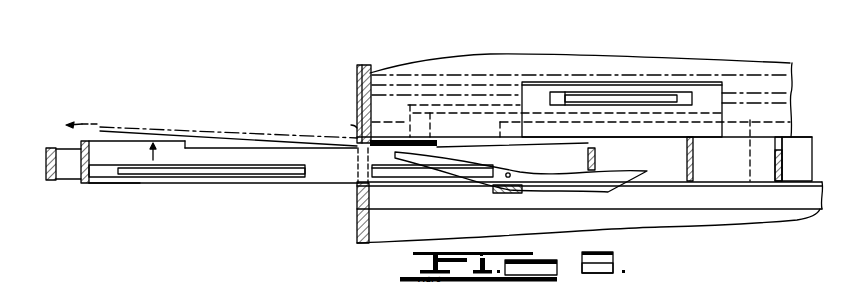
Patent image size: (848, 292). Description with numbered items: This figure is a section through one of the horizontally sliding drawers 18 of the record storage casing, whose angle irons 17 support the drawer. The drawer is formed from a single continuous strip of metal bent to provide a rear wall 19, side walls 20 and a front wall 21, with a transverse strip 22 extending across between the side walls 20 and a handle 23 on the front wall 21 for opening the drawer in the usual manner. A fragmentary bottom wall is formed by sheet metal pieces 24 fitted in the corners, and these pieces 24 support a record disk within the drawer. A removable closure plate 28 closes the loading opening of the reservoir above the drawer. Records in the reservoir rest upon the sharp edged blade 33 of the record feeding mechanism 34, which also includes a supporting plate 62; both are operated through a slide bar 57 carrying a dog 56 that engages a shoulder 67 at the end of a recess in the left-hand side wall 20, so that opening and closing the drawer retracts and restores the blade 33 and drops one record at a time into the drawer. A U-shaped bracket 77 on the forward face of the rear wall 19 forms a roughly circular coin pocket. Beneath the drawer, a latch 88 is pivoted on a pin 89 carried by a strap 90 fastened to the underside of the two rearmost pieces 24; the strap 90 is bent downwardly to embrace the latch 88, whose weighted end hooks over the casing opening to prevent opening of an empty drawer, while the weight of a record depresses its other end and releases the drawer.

The angle irons 17 is at (408, 201).
The drawer 18 is at (105, 187).
The rear wall 19 is at (777, 172).
The side walls 20 is at (335, 173).
The front wall 21 is at (92, 153).
The transverse strip 22 is at (597, 158).
The handle 23 is at (55, 181).
The sheet metal pieces 24 is at (240, 166).
The closure plate 28 is at (371, 69).
The blade 33 is at (598, 92).
The record feeding mechanism 34 is at (643, 81).
The dog 56 is at (357, 128).
The slide bar 57 is at (463, 115).
The supporting plate 62 is at (613, 100).
The shoulder 67 is at (187, 143).
The U-shaped bracket 77 is at (690, 156).
The latch 88 is at (563, 181).
The pin 89 is at (492, 186).
The strap 90 is at (507, 186).